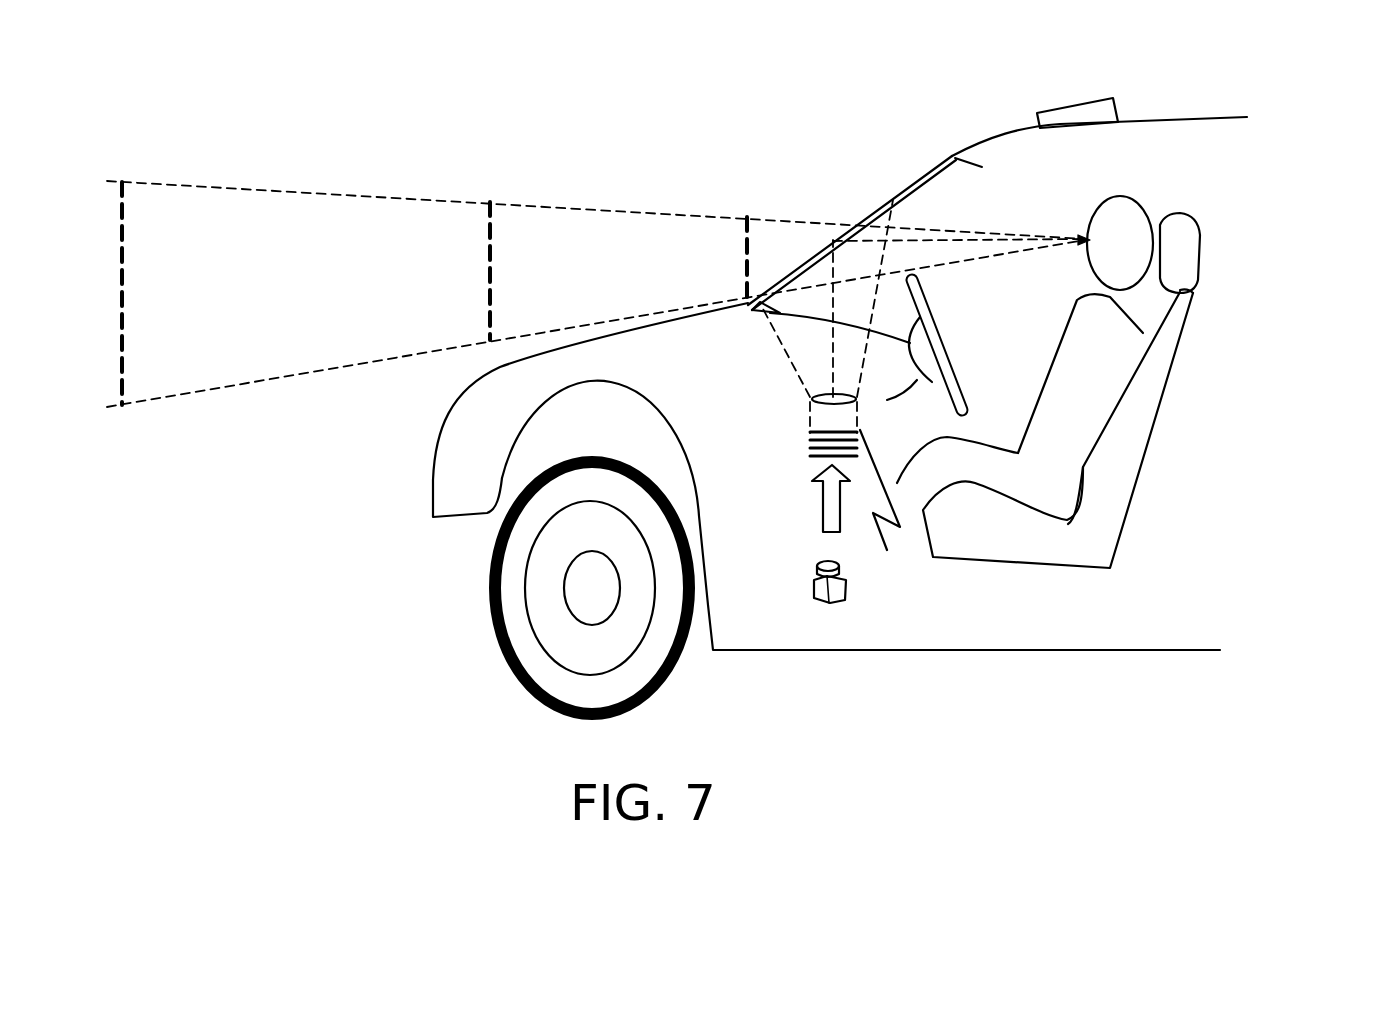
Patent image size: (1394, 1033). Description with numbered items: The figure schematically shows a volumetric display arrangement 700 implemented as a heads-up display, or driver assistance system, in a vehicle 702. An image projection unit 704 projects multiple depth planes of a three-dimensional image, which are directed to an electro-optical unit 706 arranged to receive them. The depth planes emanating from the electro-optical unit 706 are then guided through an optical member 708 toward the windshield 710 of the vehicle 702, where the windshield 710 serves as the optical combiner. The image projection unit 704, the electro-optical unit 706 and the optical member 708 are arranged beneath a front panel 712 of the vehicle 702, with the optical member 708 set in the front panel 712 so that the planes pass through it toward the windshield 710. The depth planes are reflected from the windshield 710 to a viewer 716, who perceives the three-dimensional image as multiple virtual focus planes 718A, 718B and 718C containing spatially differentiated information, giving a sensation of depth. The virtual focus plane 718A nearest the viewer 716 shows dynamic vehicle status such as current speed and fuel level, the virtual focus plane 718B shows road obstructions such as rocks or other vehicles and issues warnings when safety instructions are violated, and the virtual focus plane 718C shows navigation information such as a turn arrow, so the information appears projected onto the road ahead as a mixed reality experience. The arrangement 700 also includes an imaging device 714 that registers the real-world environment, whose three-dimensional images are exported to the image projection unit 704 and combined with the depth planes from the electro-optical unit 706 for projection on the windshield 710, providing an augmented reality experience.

The volumetric display arrangement 700 is at (1324, 109).
The vehicle 702 is at (933, 618).
The image projection unit 704 is at (812, 592).
The electro-optical unit 706 is at (803, 430).
The optical member 708 is at (810, 398).
The windshield 710 is at (880, 203).
The front panel 712 is at (748, 330).
The imaging device 714 is at (1040, 113).
The viewer 716 is at (1117, 218).
The virtual focus plane 718A is at (747, 253).
The virtual focus plane 718B is at (490, 247).
The virtual focus plane 718C is at (123, 273).